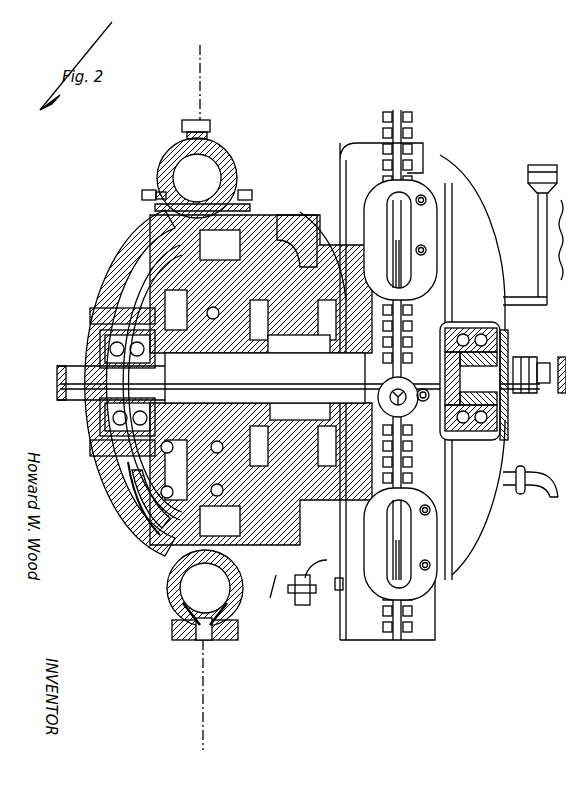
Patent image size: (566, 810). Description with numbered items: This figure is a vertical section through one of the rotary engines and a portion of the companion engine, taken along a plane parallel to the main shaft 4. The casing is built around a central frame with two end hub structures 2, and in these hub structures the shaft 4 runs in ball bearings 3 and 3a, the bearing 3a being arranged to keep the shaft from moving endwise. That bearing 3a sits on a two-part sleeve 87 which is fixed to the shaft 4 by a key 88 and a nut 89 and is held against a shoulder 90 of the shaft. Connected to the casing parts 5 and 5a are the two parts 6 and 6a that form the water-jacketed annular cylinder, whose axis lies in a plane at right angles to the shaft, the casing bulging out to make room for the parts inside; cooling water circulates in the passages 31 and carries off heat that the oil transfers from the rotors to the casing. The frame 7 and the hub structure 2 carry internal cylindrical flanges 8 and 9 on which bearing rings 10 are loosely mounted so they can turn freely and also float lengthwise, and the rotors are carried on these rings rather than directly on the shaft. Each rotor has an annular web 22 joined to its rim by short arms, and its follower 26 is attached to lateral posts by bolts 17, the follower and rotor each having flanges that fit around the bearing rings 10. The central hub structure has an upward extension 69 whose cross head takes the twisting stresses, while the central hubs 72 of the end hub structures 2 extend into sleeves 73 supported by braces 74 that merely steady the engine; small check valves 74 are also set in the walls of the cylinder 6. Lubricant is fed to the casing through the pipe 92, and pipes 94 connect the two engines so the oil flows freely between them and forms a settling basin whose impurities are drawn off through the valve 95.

The end hub structure 2 is at (95, 306).
The ball bearing 3 is at (78, 437).
The ball bearing 3a is at (504, 416).
The main shaft 4 is at (57, 386).
The casing part 5 is at (476, 204).
The casing part 5a is at (118, 240).
The annular cylinder part 6 is at (230, 162).
The annular cylinder part 6a is at (172, 160).
The frame 7 is at (296, 345).
The internal cylindrical flange 8 is at (262, 345).
The internal cylindrical flange 9 is at (112, 440).
The bearing ring 10 is at (248, 340).
The bolt 17 is at (158, 235).
The annular web 22 is at (142, 506).
The rotor follower 26 is at (118, 470).
The water passage 31 is at (136, 596).
The upward extension 69 is at (300, 215).
The central hub 72 is at (78, 420).
The sleeve 73 is at (526, 472).
The brace 74 is at (148, 192).
The two-part sleeve 87 is at (445, 382).
The key 88 is at (474, 381).
The nut 89 is at (528, 388).
The shoulder 90 is at (445, 358).
The lubricant pipe 92 is at (538, 238).
The connecting pipe 94 is at (280, 590).
The valve 95 is at (306, 608).